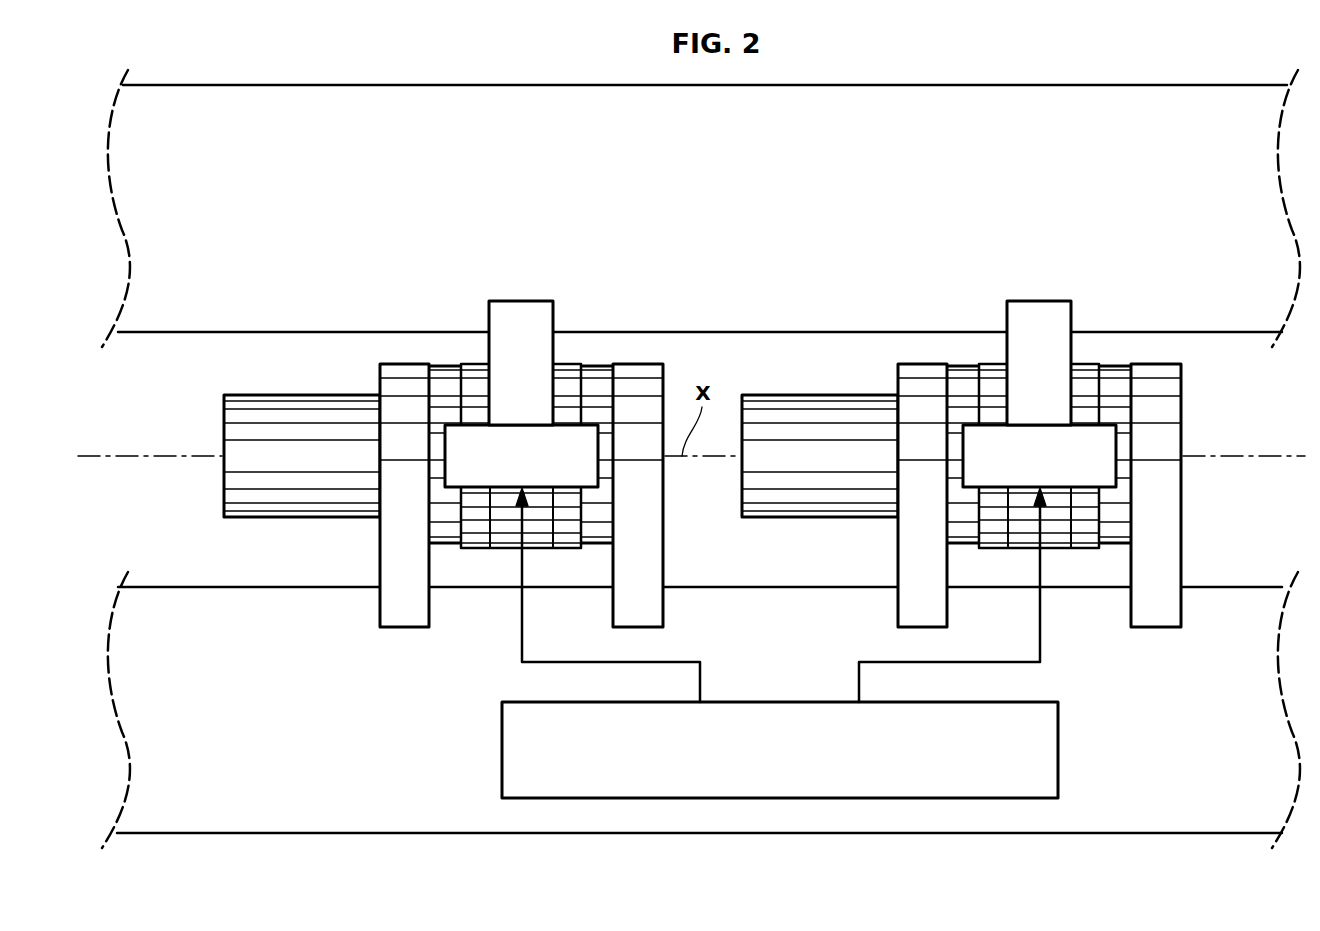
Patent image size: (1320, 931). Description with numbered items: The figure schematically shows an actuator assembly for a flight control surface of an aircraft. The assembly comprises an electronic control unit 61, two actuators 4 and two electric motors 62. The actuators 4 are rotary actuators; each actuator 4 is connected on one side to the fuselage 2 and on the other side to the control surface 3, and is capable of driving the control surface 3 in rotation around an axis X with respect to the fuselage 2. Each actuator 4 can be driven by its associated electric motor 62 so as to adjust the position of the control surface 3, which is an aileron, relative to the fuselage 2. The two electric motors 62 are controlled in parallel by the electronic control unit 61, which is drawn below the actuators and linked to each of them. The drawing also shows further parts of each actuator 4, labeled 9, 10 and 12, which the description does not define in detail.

The fuselage 2 is at (773, 610).
The control surface 3 is at (778, 312).
The actuator 4 is at (445, 366).
The first disc 9 is at (405, 573).
The second disc 10 is at (640, 572).
The armature 12 is at (542, 347).
The electronic control unit 61 is at (773, 720).
The electric motor 62 is at (305, 497).